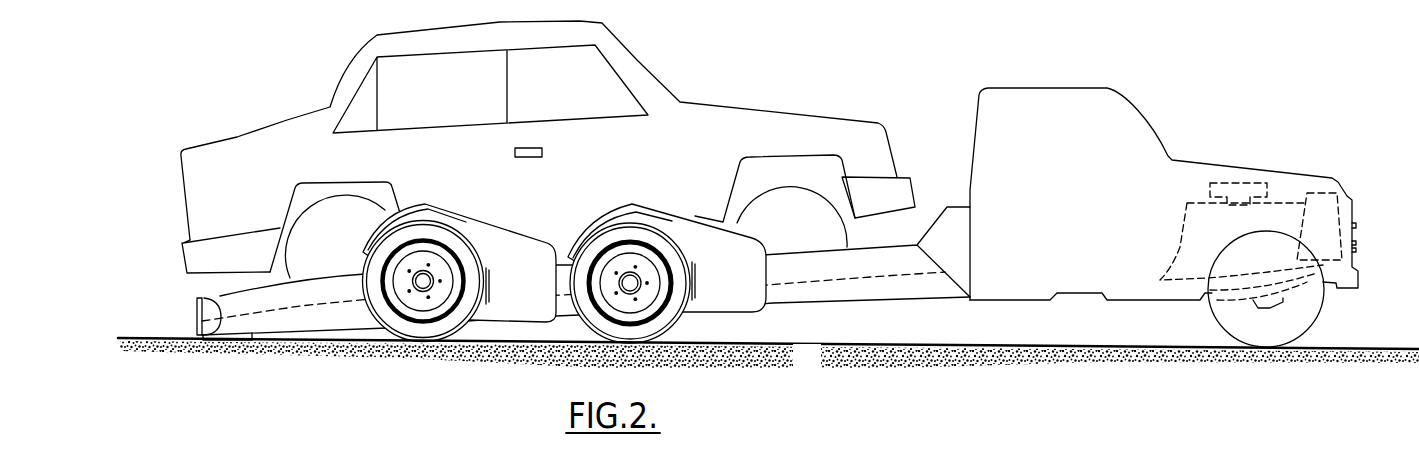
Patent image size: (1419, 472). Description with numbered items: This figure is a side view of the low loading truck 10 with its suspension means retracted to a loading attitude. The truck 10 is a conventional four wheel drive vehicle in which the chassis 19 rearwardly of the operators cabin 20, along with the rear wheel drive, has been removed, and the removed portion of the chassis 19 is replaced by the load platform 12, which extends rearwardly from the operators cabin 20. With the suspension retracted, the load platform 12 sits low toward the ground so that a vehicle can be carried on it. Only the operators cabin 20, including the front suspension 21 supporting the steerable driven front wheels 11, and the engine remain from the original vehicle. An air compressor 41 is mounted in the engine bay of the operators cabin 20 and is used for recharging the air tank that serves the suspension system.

The truck 10 is at (1182, 235).
The front wheels 11 is at (1290, 325).
The load platform 12 is at (827, 318).
The chassis 19 is at (1130, 290).
The operators cabin 20 is at (1112, 242).
The front suspension 21 is at (1272, 300).
The air compressor 41 is at (1325, 215).